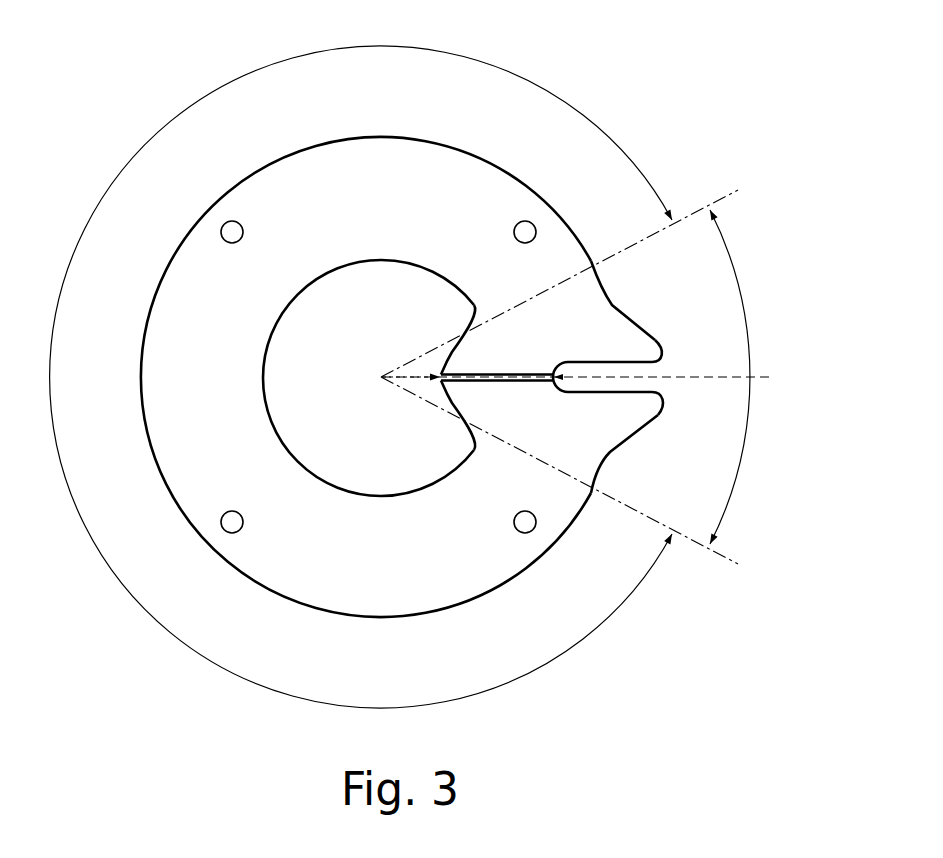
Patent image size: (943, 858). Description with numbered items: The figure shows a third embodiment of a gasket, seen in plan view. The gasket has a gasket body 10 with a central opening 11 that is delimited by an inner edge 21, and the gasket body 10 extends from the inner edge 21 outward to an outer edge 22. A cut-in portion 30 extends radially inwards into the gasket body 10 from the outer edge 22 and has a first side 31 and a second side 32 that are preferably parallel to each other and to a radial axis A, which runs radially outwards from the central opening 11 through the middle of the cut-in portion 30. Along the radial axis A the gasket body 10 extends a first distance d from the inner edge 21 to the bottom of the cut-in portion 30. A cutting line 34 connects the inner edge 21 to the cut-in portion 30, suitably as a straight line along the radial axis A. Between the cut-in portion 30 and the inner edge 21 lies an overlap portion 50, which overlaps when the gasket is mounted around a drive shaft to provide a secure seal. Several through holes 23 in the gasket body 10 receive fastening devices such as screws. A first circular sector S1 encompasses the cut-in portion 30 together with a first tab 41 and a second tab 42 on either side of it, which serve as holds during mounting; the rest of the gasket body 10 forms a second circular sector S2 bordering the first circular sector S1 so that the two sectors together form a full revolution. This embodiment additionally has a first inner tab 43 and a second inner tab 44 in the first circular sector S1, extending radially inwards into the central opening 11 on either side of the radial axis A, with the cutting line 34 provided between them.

The gasket body 10 is at (433, 363).
The central opening 11 is at (307, 390).
The inner edge 21 is at (372, 262).
The outer edge 22 is at (405, 137).
The through holes 23 is at (222, 228).
The cut-in portion 30 is at (639, 378).
The first side 31 is at (607, 366).
The second side 32 is at (621, 394).
The cutting line 34 is at (481, 375).
The first tab 41 is at (662, 348).
The second tab 42 is at (663, 407).
The first inner tab 43 is at (441, 362).
The second inner tab 44 is at (441, 403).
The overlap portion 50 is at (583, 270).
The radial axis A is at (588, 378).
The first distance d is at (382, 377).
The first circular sector S1 is at (575, 377).
The second circular sector S2 is at (361, 360).